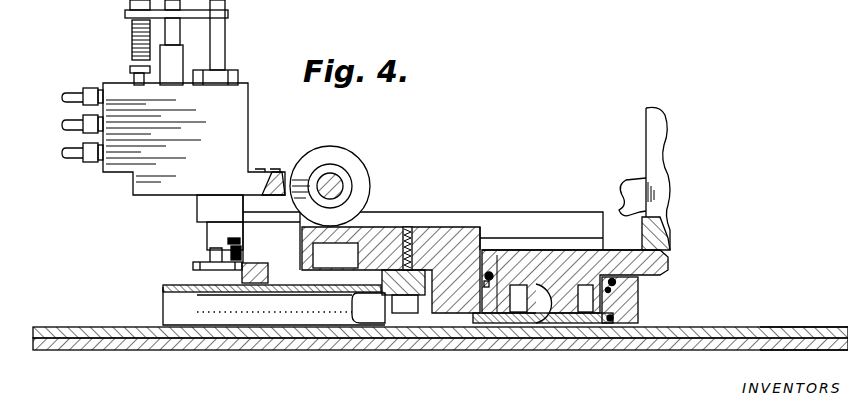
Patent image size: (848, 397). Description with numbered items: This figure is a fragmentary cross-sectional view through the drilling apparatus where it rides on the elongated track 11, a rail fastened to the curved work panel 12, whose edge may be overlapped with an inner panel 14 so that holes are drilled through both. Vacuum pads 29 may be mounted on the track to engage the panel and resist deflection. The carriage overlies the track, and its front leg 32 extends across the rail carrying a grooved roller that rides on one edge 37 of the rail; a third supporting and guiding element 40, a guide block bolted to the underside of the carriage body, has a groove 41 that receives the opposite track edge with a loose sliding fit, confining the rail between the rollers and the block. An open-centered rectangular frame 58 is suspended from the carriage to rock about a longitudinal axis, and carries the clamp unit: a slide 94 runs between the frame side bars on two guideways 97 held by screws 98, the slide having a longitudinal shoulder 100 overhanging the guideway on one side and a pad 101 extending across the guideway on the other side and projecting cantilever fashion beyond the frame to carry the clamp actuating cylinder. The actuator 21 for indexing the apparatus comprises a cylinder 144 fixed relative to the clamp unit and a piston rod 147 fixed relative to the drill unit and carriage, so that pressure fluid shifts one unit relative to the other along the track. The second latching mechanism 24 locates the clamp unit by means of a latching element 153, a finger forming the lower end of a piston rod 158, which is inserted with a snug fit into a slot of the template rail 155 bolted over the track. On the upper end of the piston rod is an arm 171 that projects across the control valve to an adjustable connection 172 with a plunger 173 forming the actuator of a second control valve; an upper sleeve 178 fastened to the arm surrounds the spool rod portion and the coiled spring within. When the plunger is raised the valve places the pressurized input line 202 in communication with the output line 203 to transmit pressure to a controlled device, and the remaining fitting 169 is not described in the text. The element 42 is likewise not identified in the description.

The track 11 is at (176, 283).
The work panel 12 is at (808, 327).
The inner panel 14 is at (662, 352).
The actuator 21 is at (363, 166).
The second latching mechanism 24 is at (133, 207).
The vacuum pad 29 is at (277, 302).
The front leg 32 is at (270, 172).
The edge of the rail 37 is at (163, 292).
The third supporting and guiding element 40 is at (393, 298).
The groove 41 is at (391, 270).
The cup 42 is at (384, 294).
The frame 58 is at (643, 318).
The slide 94 is at (545, 302).
The guideway 97 is at (520, 272).
The screw 98 is at (640, 294).
The longitudinal shoulder 100 is at (491, 272).
The pad 101 is at (672, 265).
The cylinder 144 is at (334, 148).
The piston rod 147 is at (330, 188).
The latching element 153 is at (195, 251).
The template rail 155 is at (262, 257).
The piston rod 158 is at (238, 72).
The fitting 169 is at (63, 127).
The arm 171 is at (230, 15).
The adjustable connection 172 is at (132, 42).
The plunger 173 is at (130, 71).
The upper sleeve 178 is at (175, 63).
The pressurized input line 202 is at (73, 165).
The output line 203 is at (70, 92).